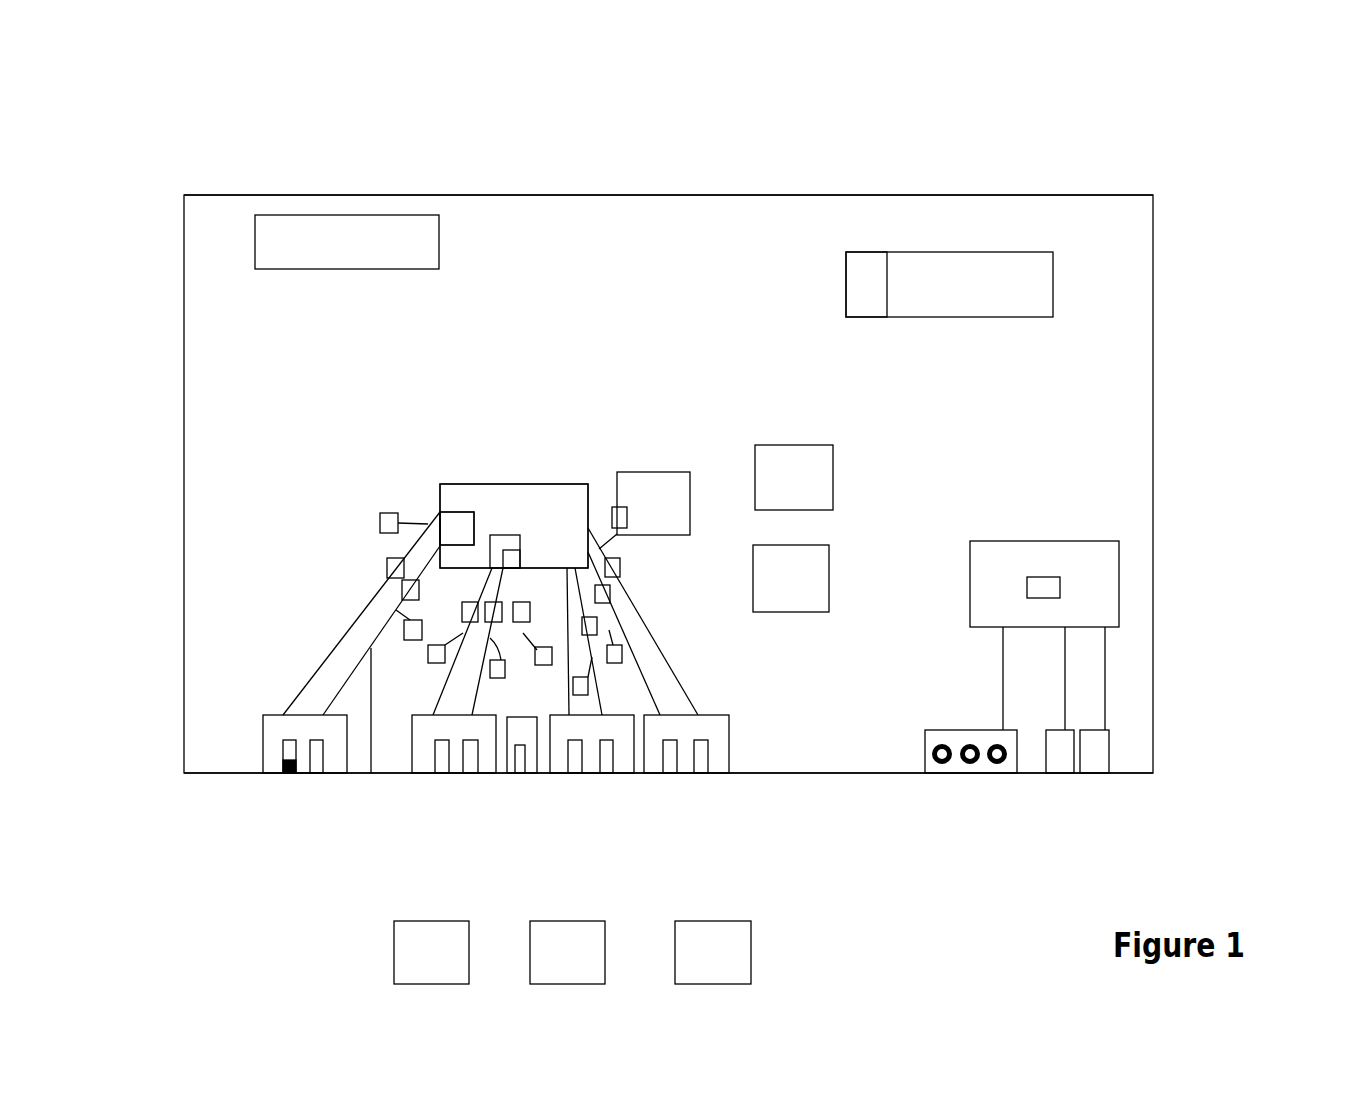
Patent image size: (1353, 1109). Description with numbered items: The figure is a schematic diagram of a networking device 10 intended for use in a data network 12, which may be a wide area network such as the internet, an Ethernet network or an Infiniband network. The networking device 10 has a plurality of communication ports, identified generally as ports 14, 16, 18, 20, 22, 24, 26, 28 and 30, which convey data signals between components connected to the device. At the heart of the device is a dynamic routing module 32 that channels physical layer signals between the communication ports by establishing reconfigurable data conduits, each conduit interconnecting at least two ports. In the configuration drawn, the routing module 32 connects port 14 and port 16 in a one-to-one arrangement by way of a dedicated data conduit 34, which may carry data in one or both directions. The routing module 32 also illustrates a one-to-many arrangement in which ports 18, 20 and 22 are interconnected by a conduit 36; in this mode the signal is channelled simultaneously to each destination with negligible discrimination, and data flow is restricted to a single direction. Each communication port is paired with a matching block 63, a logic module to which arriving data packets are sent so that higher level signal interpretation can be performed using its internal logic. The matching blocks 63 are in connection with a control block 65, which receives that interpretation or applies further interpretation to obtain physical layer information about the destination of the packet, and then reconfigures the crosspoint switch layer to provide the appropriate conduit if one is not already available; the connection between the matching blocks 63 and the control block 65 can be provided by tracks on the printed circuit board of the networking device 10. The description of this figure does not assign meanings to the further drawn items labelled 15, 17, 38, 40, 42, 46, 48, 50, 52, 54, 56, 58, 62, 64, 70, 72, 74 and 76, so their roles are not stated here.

The networking device 10 is at (226, 166).
The data network 12 is at (1222, 178).
The communication port 14 is at (288, 773).
The pin contact 15 is at (287, 762).
The communication port 16 is at (401, 214).
The first connector 17 is at (262, 717).
The communication port 18 is at (442, 773).
The communication port 20 is at (470, 773).
The communication port 22 is at (520, 568).
The communication port 24 is at (575, 773).
The communication port 26 is at (607, 773).
The communication port 28 is at (670, 773).
The communication port 30 is at (701, 773).
The dynamic routing module 32 is at (522, 535).
The dedicated data conduit 34 is at (474, 512).
The conduit 36 is at (520, 475).
The circuit board 38 is at (1079, 194).
The conductor trace 40 is at (340, 632).
The trace 42 is at (373, 744).
The power supply 46 is at (935, 252).
The power input 48 is at (866, 251).
The communication module 50 is at (1119, 541).
The terminal 52 is at (1105, 773).
The connector 54 is at (1000, 773).
The processor 56 is at (465, 512).
The board edge 58 is at (783, 775).
The sensor 62 is at (620, 558).
The matching block 63 is at (614, 507).
The memory 64 is at (794, 477).
The control block 65 is at (791, 578).
The device 70 is at (431, 952).
The device 72 is at (567, 952).
The device 74 is at (713, 952).
The antenna 76 is at (1046, 577).